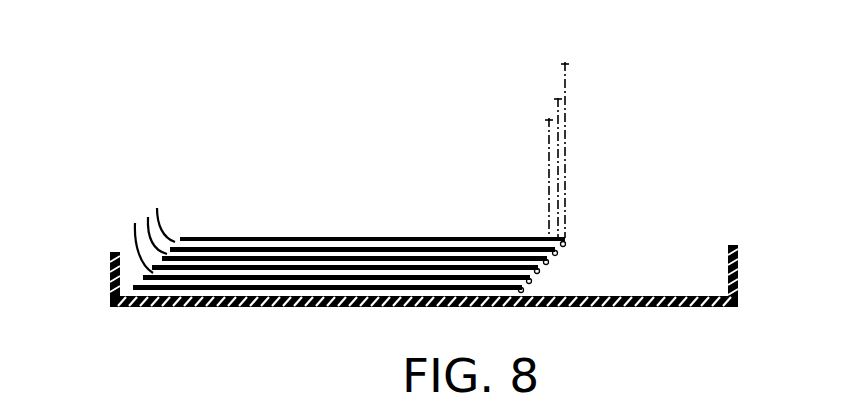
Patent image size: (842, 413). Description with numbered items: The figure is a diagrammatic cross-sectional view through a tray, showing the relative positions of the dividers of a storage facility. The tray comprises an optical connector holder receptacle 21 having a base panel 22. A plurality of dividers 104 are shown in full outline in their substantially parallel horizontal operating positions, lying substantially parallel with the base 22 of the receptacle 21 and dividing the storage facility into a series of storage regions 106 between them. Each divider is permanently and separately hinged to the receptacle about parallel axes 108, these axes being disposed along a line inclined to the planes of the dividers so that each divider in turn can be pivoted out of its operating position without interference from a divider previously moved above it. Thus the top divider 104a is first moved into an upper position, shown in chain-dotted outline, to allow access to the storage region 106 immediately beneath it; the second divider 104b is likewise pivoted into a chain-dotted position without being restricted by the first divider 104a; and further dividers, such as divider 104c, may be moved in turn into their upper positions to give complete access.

The optical connector holder receptacle 21 is at (109, 290).
The base panel 22 is at (378, 307).
The dividers 104 is at (292, 246).
The top divider 104a is at (566, 71).
The second divider 104b is at (558, 98).
The divider 104c is at (549, 138).
The storage regions 106 is at (137, 232).
The parallel axes 108 is at (545, 281).